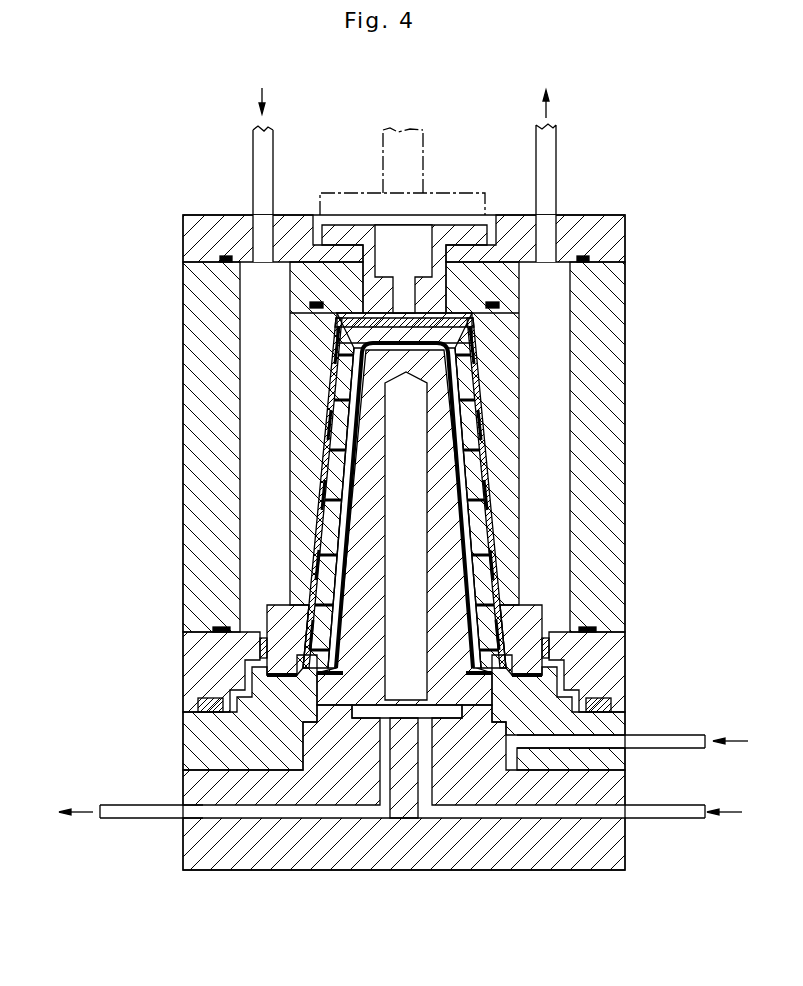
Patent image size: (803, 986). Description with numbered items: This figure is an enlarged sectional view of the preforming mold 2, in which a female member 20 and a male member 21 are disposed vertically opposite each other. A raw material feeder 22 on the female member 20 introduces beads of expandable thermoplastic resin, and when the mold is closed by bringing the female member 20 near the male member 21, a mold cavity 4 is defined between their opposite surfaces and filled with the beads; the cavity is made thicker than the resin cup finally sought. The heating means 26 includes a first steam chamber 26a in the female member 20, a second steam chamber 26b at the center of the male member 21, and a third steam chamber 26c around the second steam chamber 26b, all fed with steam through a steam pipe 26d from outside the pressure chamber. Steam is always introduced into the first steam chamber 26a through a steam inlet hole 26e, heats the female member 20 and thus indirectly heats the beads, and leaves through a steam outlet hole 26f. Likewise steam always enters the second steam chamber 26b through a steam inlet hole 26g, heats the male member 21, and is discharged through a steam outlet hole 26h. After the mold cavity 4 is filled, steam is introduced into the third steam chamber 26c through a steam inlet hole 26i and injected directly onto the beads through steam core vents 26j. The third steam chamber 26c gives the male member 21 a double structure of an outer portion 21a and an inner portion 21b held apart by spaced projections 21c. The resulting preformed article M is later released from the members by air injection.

The preforming mold 2 is at (628, 184).
The mold cavity 4 is at (447, 499).
The female member 20 is at (602, 392).
The male member 21 is at (502, 849).
The outer portion 21a is at (325, 583).
The inner portion 21b is at (363, 630).
The projections 21c is at (357, 432).
The raw material feeder 22 is at (412, 128).
The heating means 26 is at (380, 493).
The first steam chamber 26a is at (257, 433).
The second steam chamber 26b is at (357, 469).
The third steam chamber 26c is at (345, 505).
The steam pipe 26d is at (258, 167).
The steam inlet hole 26e is at (262, 260).
The steam outlet hole 26f is at (546, 264).
The steam inlet hole 26g is at (604, 820).
The steam outlet hole 26h is at (200, 814).
The steam inlet hole 26i is at (610, 741).
The steam core vents 26j is at (472, 352).
The preformed article M is at (362, 316).